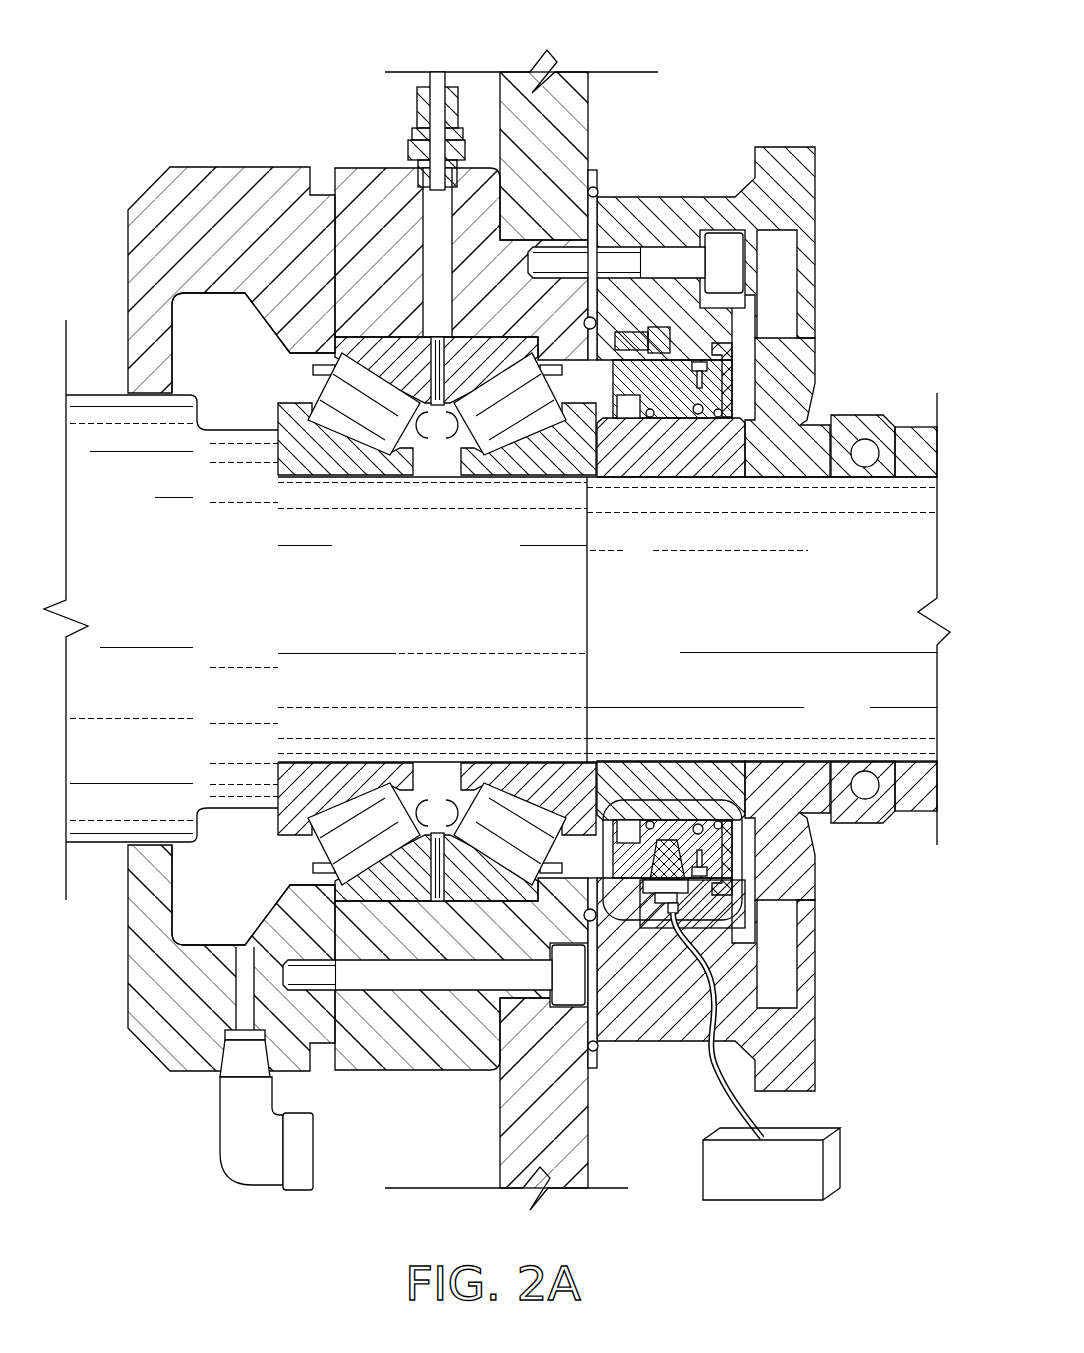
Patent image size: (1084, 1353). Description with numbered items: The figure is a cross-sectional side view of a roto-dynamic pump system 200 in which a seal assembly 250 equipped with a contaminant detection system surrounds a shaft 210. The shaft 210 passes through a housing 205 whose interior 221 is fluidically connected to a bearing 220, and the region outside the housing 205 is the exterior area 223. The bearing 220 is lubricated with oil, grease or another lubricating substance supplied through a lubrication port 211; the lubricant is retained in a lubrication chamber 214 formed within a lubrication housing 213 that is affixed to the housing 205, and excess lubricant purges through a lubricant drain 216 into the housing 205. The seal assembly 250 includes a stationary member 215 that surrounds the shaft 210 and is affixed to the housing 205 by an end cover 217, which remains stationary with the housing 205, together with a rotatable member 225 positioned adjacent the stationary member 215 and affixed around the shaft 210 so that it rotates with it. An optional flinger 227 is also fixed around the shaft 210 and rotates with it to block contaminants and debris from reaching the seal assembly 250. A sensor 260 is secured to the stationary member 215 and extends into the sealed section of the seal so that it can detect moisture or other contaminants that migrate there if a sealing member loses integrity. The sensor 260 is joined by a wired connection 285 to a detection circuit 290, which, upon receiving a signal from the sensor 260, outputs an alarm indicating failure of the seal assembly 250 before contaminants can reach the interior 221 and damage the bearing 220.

The roto-dynamic pump system 200 is at (843, 88).
The housing 205 is at (590, 120).
The shaft 210 is at (742, 616).
The lubrication port 211 is at (415, 118).
The lubrication housing 213 is at (130, 195).
The lubrication chamber 214 is at (263, 384).
The stationary member 215 is at (682, 396).
The lubricant drain 216 is at (237, 1138).
The end cover 217 is at (700, 198).
The bearing 220 is at (420, 376).
The interior 221 is at (120, 296).
The exterior area 223 is at (700, 334).
The rotatable member 225 is at (735, 388).
The flinger 227 is at (802, 392).
The seal assembly 250 is at (745, 866).
The sensor 260 is at (682, 898).
The cable 285 is at (730, 1085).
The detection circuit 290 is at (793, 1186).